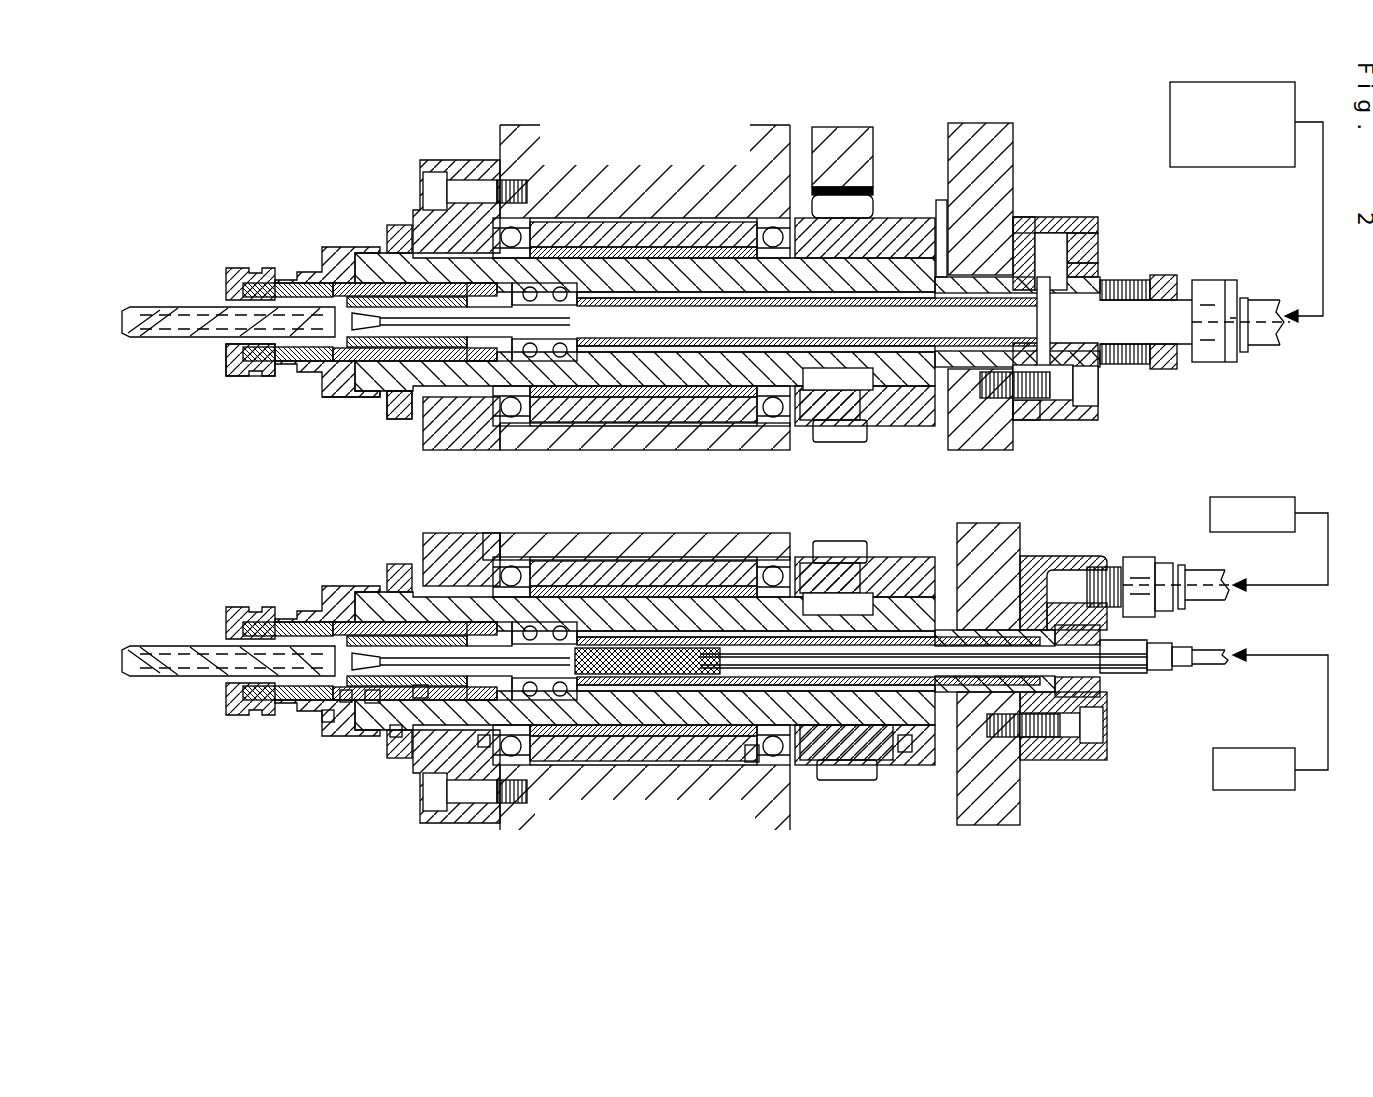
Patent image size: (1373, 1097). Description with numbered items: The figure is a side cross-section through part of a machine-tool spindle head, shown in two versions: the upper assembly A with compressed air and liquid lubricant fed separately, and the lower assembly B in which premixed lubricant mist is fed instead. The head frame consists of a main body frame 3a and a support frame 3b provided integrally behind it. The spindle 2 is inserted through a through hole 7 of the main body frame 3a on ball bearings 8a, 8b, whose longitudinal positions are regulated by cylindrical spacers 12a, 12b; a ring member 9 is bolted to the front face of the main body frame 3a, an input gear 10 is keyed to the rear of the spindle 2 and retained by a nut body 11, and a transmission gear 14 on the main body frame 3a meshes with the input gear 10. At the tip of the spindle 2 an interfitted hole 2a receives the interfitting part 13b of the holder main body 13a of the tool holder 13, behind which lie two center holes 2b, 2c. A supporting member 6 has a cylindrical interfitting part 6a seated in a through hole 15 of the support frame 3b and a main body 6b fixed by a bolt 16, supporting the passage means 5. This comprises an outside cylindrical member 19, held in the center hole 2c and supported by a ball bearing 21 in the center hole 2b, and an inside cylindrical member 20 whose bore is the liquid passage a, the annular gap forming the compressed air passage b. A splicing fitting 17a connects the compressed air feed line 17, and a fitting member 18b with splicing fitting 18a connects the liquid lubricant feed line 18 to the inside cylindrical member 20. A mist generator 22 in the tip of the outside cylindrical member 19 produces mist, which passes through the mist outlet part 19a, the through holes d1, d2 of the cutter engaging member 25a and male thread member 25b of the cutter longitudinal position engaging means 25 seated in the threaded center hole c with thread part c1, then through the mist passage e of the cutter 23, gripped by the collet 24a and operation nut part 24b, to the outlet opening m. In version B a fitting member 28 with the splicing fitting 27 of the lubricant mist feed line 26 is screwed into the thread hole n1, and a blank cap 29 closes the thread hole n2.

The spindle device of the first example A is at (235, 548).
The spindle device of the modified example B is at (228, 168).
The spindle 2 is at (413, 227).
The interfitted hole 2a is at (362, 258).
The center hole 2b is at (553, 283).
The center hole 2c is at (797, 298).
The main body frame 3a is at (718, 170).
The support frame 3b is at (1010, 150).
The passage means 5 is at (945, 615).
The supporting member 6 is at (1090, 217).
The cylindrical interfitting part 6a is at (960, 420).
The main body 6b is at (1028, 225).
The through hole 7 is at (725, 218).
The ball bearing 8a is at (517, 560).
The ball bearing 8b is at (777, 560).
The ring member 9 is at (458, 160).
The input gear 10 is at (845, 444).
The nut body 11 is at (910, 426).
The cylindrical spacer 12a is at (612, 235).
The cylindrical spacer 12b is at (660, 250).
The tool holder 13 is at (312, 270).
The holder main body 13a is at (342, 400).
The interfitting part 13b is at (400, 421).
The transmission gear 14 is at (875, 166).
The through hole 15 is at (940, 280).
The bolt 16 is at (1092, 398).
The compressed air feed line 17 is at (1328, 615).
The splicing fitting 17a is at (1140, 557).
The liquid lubricant feed line 18 is at (1328, 690).
The splicing fitting 18a is at (1165, 673).
The fitting member 18b is at (1102, 692).
The outside cylindrical member 19 is at (690, 307).
The mist outlet part 19a is at (490, 533).
The inside cylindrical member 20 is at (750, 605).
The ball bearing 21 is at (560, 628).
The mist generator 22 is at (610, 648).
The cutter 23 is at (172, 340).
The collet 24a is at (260, 268).
The operation nut part 24b is at (252, 378).
The cutter longitudinal position engaging means 25 is at (438, 500).
The cutter engaging member 25a is at (377, 600).
The male thread member 25b is at (437, 565).
The lubricant mist feed line 26 is at (1323, 236).
The splicing fitting 27 is at (1215, 362).
The fitting member 28 is at (1160, 276).
The blank cap 29 is at (1100, 248).
The outlet opening m is at (122, 305).
The mist passage e is at (168, 310).
The liquid passage a is at (752, 762).
The compressed air passage b is at (905, 752).
The center hole c is at (345, 600).
The thread part c1 is at (320, 722).
The longitudinal through hole d1 is at (395, 737).
The longitudinal through hole d2 is at (480, 747).
The thread hole n1 is at (1068, 324).
The thread hole n2 is at (1051, 261).